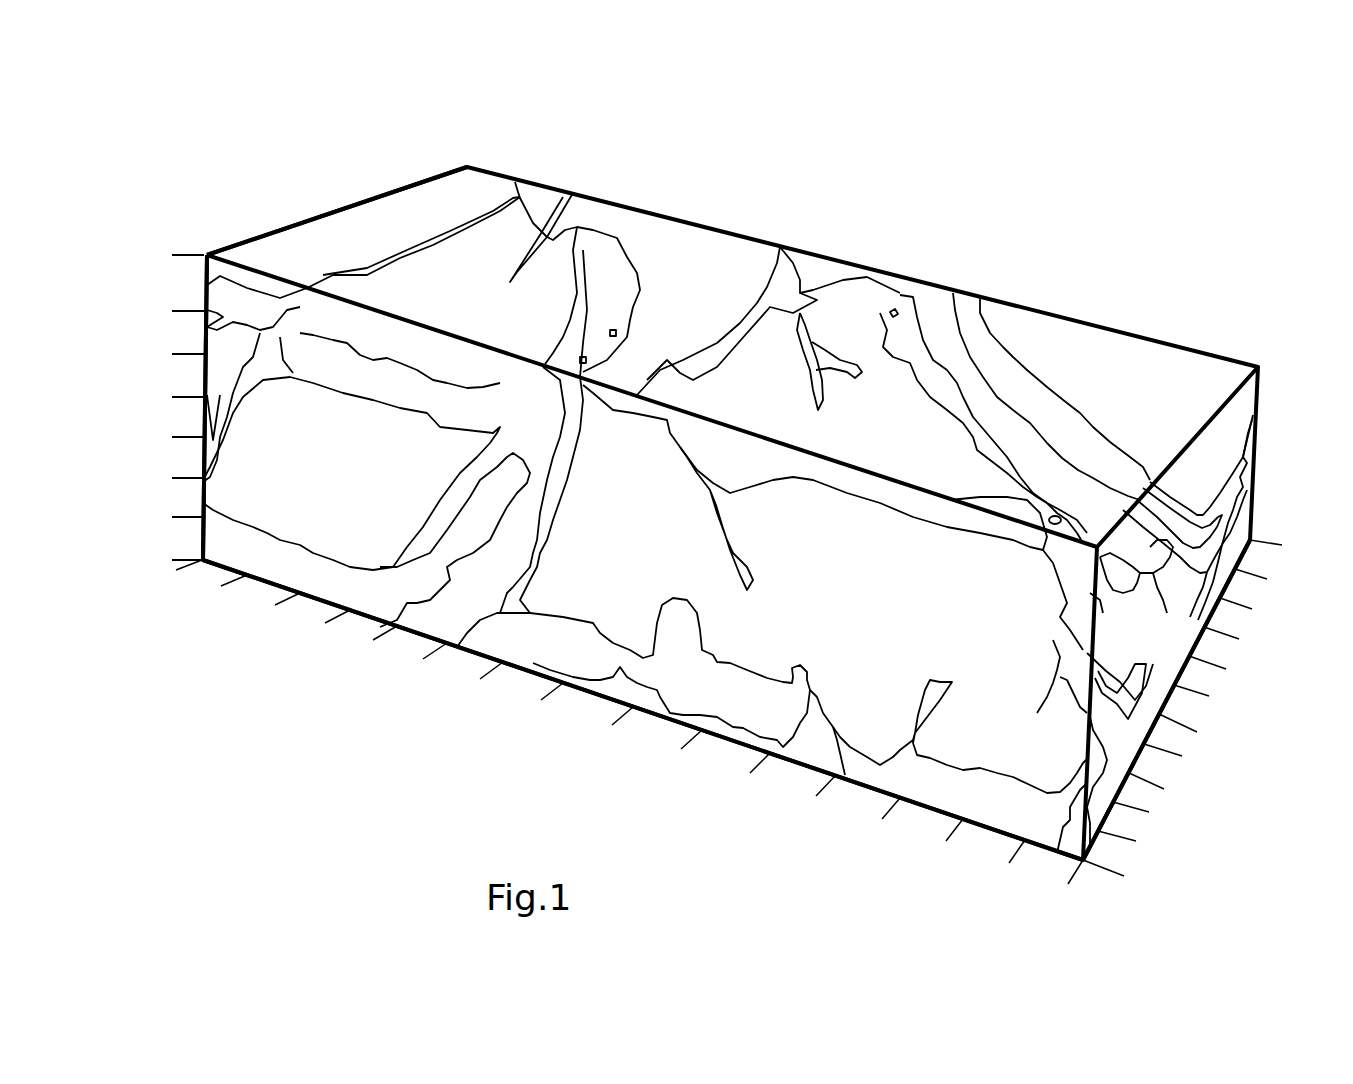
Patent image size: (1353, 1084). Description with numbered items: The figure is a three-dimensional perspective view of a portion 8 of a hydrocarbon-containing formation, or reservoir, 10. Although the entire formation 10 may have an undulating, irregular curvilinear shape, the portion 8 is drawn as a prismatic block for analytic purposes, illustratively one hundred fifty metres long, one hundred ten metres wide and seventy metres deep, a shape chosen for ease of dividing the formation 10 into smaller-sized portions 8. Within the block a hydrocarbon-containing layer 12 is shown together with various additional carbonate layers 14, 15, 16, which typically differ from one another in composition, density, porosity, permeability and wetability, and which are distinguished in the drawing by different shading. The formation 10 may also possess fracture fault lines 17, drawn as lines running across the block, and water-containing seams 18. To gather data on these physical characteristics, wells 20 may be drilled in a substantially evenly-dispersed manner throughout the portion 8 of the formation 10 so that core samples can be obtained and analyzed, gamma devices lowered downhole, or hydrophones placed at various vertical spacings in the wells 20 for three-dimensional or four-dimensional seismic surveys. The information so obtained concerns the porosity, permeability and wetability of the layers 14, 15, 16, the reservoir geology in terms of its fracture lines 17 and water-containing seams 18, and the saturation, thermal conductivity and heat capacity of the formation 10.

The portion of hydrocarbon-containing formation 8 is at (363, 197).
The hydrocarbon-containing formation 10 is at (443, 122).
The hydrocarbon-containing layer 12 is at (290, 551).
The carbonate layer 14 is at (203, 490).
The carbonate layer 15 is at (203, 548).
The carbonate layer 16 is at (330, 337).
The fracture fault lines 17 is at (900, 295).
The water-containing seams 18 is at (458, 650).
The wells 20 is at (1103, 362).